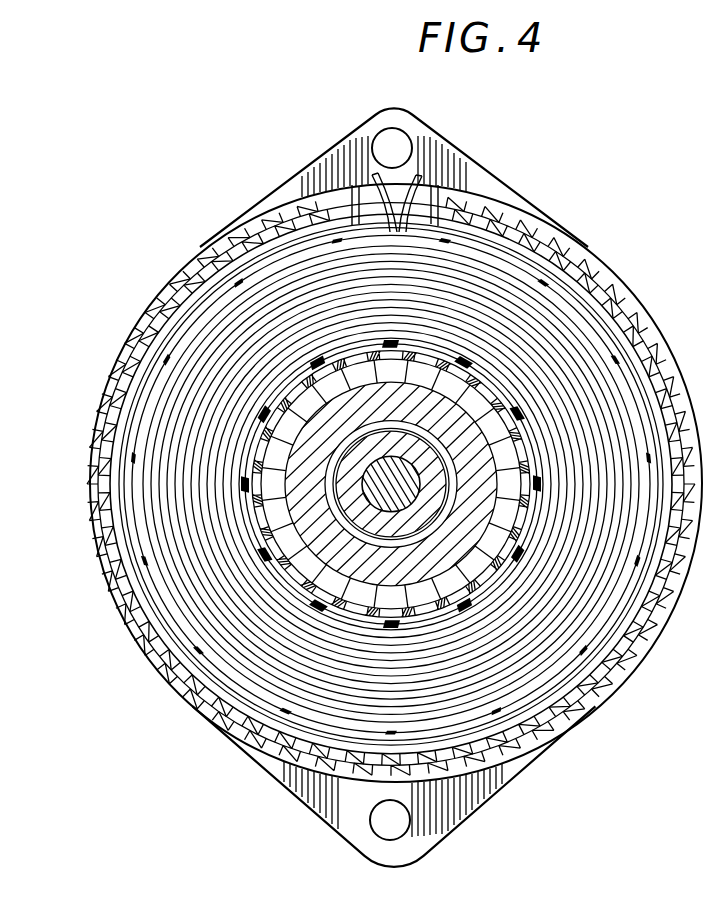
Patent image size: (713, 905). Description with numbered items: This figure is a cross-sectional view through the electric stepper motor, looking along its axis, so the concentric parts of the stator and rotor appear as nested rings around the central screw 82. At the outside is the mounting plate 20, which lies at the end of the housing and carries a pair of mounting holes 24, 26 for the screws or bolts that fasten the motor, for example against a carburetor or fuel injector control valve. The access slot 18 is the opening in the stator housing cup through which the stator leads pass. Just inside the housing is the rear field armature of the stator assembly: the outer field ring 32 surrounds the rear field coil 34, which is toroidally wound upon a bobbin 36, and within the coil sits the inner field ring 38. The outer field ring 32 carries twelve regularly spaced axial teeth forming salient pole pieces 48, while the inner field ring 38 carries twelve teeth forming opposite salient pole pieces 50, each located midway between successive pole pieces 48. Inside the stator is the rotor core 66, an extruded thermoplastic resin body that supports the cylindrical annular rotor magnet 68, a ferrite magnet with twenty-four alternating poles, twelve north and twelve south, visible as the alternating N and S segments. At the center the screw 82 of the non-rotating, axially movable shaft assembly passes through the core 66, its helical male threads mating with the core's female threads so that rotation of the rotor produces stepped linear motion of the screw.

The access slot 18 is at (368, 188).
The mounting plate 20 is at (322, 166).
The mounting hole 24 is at (408, 139).
The mounting hole 26 is at (398, 832).
The outer field ring 32 is at (570, 258).
The rear field coil 34 is at (607, 373).
The bobbin 36 is at (490, 382).
The inner field ring 38 is at (588, 292).
The salient pole pieces 48 is at (272, 526).
The opposite salient pole pieces 50 is at (273, 556).
The rotor core 66 is at (305, 446).
The rotor magnet 68 is at (250, 487).
The screw 82 is at (384, 480).